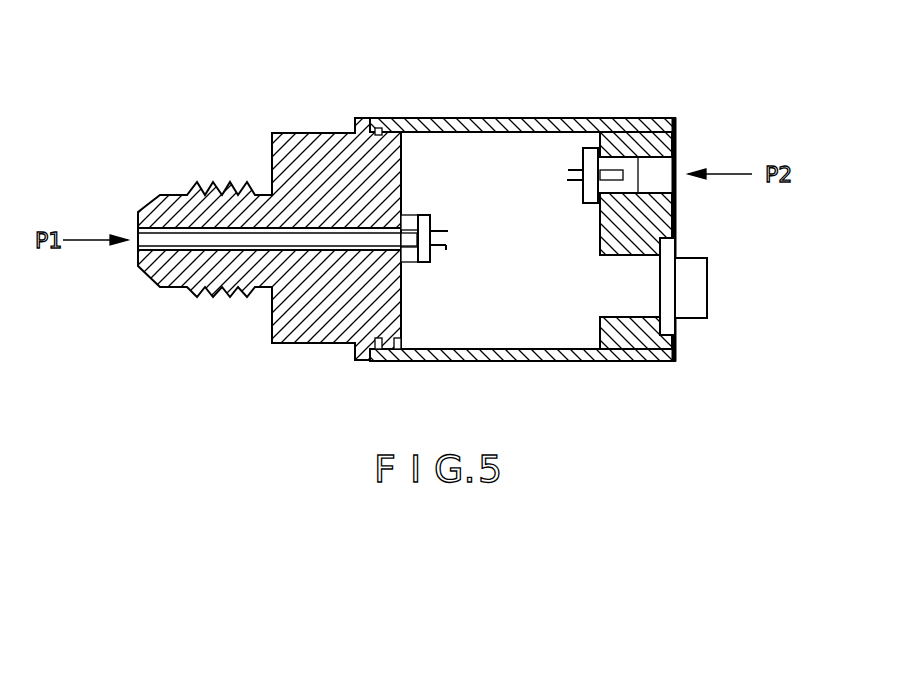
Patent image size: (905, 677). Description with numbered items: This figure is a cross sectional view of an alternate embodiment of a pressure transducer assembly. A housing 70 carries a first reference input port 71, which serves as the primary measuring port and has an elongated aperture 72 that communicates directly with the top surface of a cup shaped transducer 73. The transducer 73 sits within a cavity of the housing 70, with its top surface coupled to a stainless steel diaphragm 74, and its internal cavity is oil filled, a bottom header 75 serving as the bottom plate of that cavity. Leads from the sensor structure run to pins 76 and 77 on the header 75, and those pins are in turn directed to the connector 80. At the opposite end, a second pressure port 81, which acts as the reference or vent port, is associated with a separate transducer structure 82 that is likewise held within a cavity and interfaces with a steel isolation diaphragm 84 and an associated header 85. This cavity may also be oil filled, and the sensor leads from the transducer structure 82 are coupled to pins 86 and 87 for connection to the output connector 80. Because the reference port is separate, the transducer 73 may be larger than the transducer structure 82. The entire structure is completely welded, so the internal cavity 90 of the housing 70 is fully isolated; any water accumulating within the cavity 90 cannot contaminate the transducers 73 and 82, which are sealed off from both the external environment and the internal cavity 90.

The housing 70 is at (277, 340).
The first reference input port 71 is at (138, 232).
The elongated aperture 72 is at (235, 235).
The cup shaped transducer 73 is at (410, 215).
The stainless steel diaphragm 74 is at (385, 228).
The bottom header 75 is at (428, 213).
The pin 76 is at (443, 229).
The pin 77 is at (432, 262).
The connector 80 is at (695, 280).
The second pressure port 81 is at (637, 162).
The transducer structure 82 is at (613, 158).
The steel isolation diaphragm 84 is at (628, 188).
The header 85 is at (587, 203).
The pin 86 is at (572, 183).
The pin 87 is at (570, 167).
The internal cavity 90 is at (495, 338).